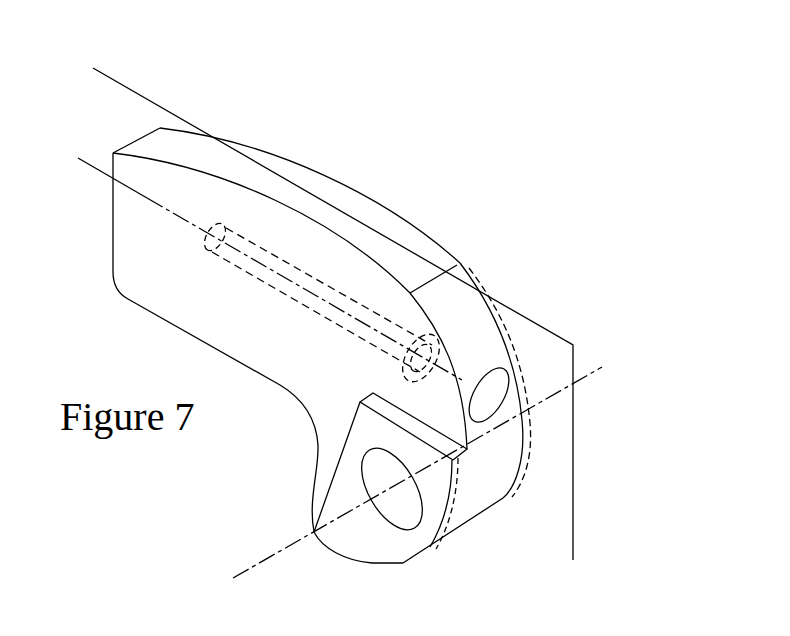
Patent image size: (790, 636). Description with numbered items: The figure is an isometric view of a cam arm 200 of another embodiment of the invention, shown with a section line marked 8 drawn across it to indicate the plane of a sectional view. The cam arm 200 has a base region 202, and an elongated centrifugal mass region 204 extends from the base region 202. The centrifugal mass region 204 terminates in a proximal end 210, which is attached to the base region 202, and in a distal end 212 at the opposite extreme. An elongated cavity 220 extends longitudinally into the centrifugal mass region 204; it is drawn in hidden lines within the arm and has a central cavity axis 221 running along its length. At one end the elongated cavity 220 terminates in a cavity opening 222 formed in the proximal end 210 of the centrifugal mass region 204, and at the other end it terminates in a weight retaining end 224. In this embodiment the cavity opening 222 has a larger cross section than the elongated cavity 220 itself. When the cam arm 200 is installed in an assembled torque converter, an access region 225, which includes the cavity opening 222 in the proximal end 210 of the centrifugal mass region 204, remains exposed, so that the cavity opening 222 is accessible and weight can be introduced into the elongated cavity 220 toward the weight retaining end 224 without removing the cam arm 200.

The section line 8- 8 is at (665, 507).
The cam arm 200 is at (452, 175).
The base region 202 is at (472, 530).
The centrifugal mass region 204 is at (353, 183).
The proximal end 210 is at (462, 320).
The distal end 212 is at (132, 250).
The elongated cavity 220 is at (357, 303).
The central cavity axis 221 is at (97, 170).
The cavity opening 222 is at (470, 385).
The weight retaining end 224 is at (220, 226).
The access region 225 is at (508, 342).